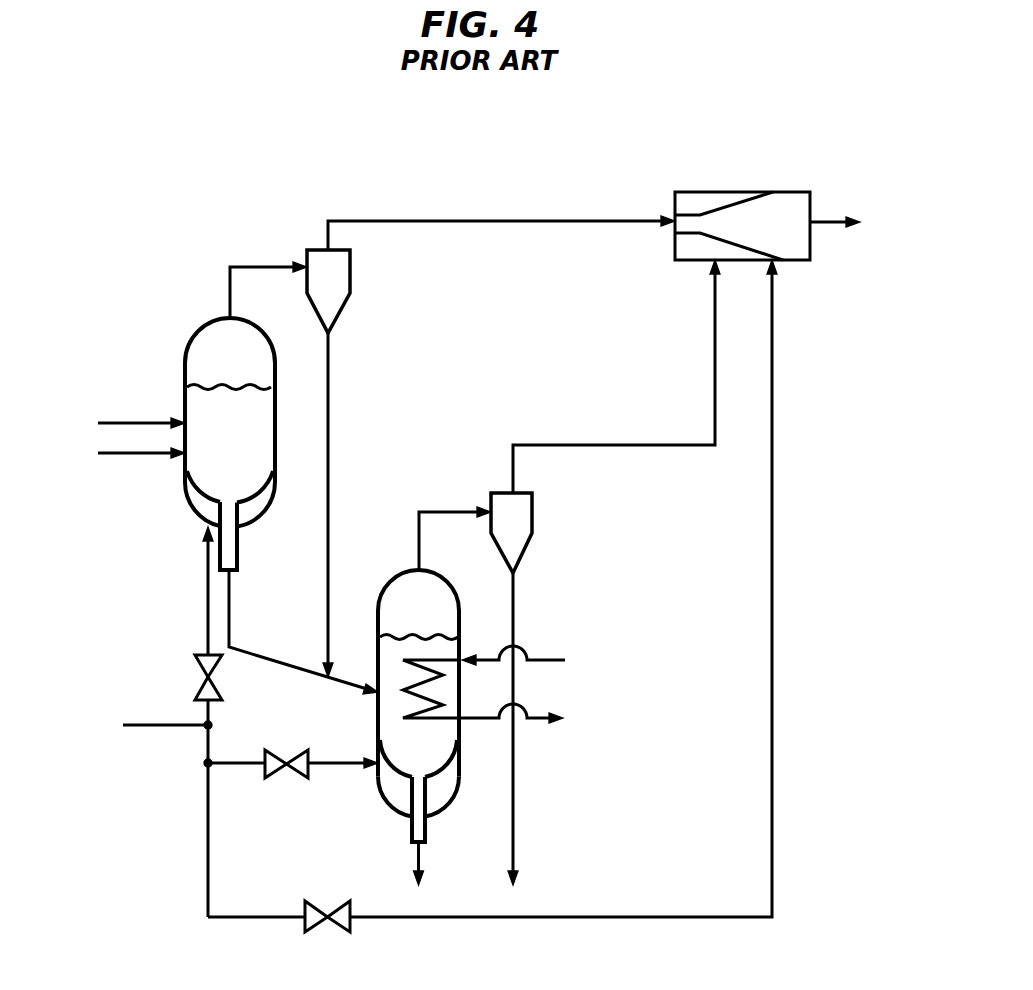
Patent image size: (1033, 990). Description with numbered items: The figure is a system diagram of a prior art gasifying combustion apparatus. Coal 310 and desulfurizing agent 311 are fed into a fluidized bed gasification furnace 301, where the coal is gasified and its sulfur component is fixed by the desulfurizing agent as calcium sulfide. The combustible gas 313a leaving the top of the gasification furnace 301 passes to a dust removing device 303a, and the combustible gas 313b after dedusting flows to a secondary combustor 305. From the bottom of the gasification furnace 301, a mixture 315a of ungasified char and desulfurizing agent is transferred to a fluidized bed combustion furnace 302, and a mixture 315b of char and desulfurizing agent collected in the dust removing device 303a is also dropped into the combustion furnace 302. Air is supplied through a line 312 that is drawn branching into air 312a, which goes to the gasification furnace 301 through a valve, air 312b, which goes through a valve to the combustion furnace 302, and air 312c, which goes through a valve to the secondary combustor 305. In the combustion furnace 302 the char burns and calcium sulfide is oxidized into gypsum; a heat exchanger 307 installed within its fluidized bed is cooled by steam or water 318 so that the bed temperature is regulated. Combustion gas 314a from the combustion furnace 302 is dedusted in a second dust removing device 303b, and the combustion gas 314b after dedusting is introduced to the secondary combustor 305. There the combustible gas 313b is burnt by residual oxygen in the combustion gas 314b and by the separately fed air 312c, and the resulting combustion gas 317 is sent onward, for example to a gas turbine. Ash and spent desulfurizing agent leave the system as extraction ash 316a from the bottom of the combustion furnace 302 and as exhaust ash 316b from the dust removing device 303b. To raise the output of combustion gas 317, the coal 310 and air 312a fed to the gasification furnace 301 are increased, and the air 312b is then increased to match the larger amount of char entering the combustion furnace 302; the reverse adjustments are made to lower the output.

The fluidized bed gasification furnace 301 is at (192, 342).
The fluidized bed combustion furnace 302 is at (396, 572).
The dust removing device 303a is at (350, 273).
The dust removing device 303b is at (533, 522).
The secondary combustor 305 is at (706, 192).
The heat exchanger 307 is at (413, 697).
The coal 310 is at (118, 453).
The desulfurizing agent 311 is at (118, 423).
The gas supply line 312 is at (152, 722).
The air 312a is at (213, 712).
The air 312b is at (225, 766).
The air 312c is at (242, 918).
The combustible gas 313a is at (265, 266).
The combustible gas after dedusting 313b is at (497, 218).
The combustion gas 314a is at (460, 511).
The combustion gas after dedusting 314b is at (610, 445).
The mixture of char and desulfurizing agent 315a is at (229, 618).
The mixture of char and desulfurizing agent 315b is at (329, 382).
The extraction ash 316a is at (420, 852).
The exhaust ash 316b is at (514, 854).
The combustion gas 317 is at (820, 222).
The steam or water 318 is at (548, 658).